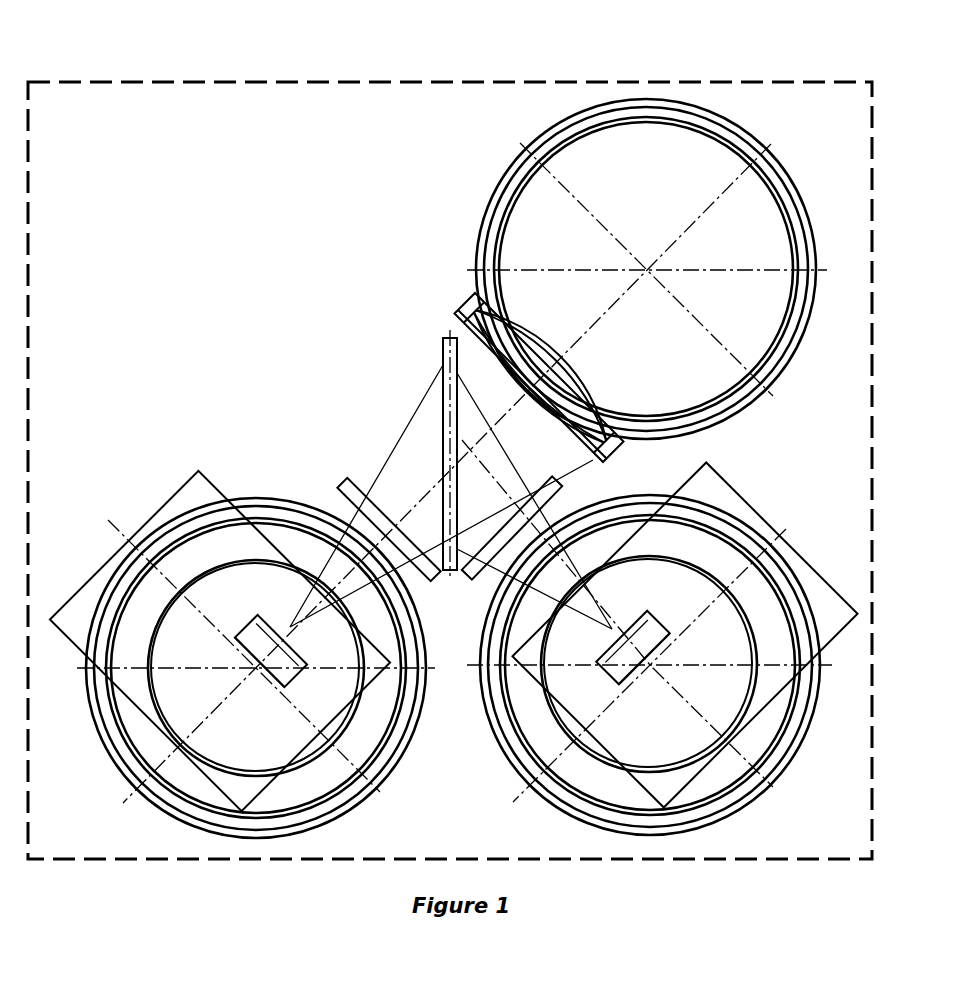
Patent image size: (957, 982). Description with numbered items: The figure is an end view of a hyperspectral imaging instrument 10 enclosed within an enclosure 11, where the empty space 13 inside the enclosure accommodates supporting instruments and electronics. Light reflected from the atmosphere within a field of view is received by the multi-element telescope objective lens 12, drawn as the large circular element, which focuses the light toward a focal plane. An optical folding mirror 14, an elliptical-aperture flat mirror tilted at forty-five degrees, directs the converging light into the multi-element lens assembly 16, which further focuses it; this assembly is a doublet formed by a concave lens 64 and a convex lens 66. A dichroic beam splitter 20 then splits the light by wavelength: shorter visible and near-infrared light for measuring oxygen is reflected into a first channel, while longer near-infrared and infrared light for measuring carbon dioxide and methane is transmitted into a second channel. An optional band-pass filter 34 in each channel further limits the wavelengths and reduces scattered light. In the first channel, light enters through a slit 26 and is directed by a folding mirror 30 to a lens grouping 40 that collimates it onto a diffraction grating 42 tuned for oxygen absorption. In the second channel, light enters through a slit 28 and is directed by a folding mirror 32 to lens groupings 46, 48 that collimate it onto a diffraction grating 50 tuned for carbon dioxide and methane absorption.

The hyperspectral imaging instrument 10 is at (890, 418).
The enclosure 11 is at (312, 80).
The multi-element telescope objective lens 12 is at (790, 177).
The empty space 13 is at (242, 278).
The optical folding mirror 14 is at (507, 203).
The multi-element lens assembly 16 is at (436, 295).
The dichroic beam splitter 20 is at (440, 345).
The slit 26 is at (623, 628).
The slit 28 is at (280, 630).
The folding mirror 30 is at (627, 687).
The folding mirror 32 is at (275, 680).
The band-pass filter 34 is at (340, 482).
The multi-element lens grouping 40 is at (538, 747).
The diffraction grating 42 is at (793, 545).
The multi-element lens grouping 46 is at (307, 762).
The multi-element lens grouping 48 is at (371, 746).
The diffraction grating 50 is at (100, 565).
The concave lens 64 is at (625, 448).
The convex lens 66 is at (595, 457).